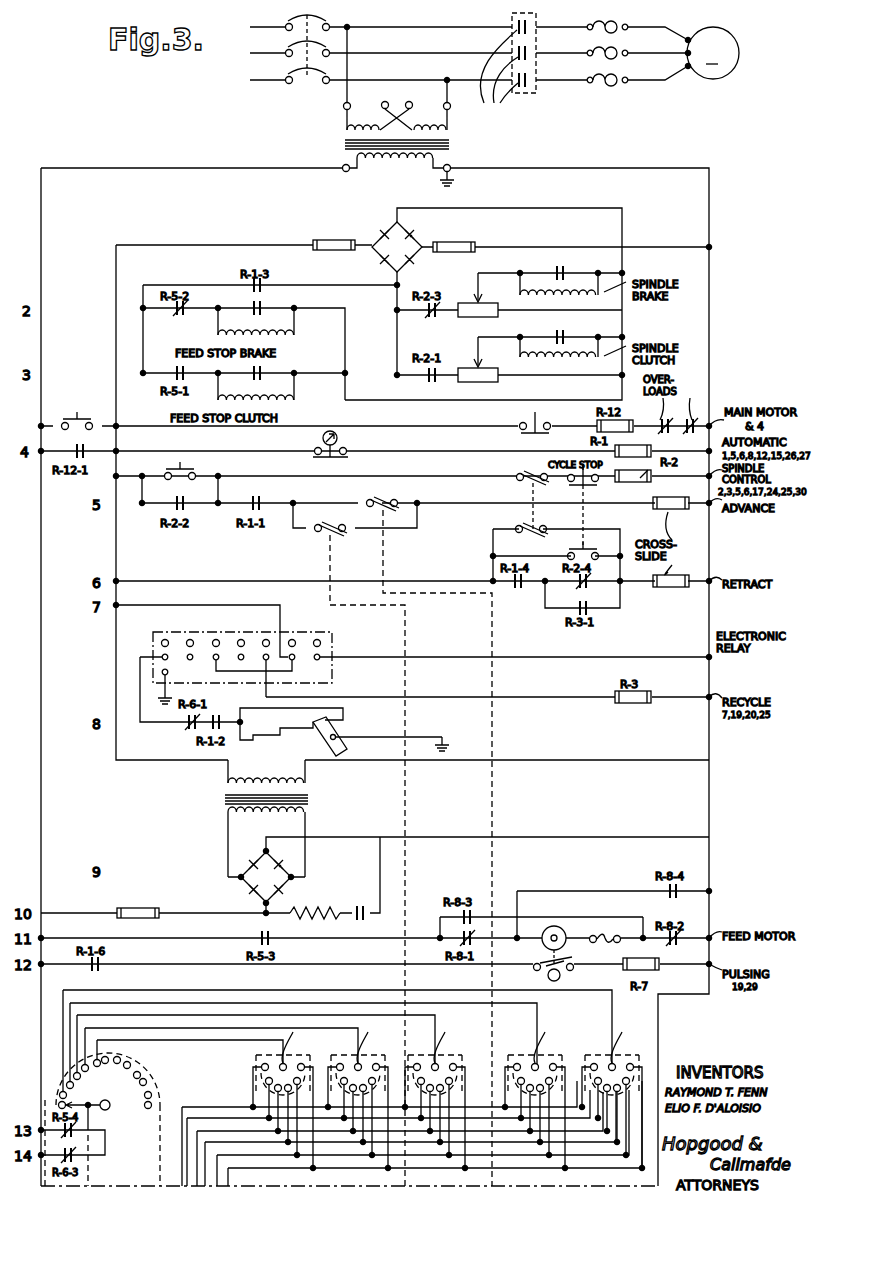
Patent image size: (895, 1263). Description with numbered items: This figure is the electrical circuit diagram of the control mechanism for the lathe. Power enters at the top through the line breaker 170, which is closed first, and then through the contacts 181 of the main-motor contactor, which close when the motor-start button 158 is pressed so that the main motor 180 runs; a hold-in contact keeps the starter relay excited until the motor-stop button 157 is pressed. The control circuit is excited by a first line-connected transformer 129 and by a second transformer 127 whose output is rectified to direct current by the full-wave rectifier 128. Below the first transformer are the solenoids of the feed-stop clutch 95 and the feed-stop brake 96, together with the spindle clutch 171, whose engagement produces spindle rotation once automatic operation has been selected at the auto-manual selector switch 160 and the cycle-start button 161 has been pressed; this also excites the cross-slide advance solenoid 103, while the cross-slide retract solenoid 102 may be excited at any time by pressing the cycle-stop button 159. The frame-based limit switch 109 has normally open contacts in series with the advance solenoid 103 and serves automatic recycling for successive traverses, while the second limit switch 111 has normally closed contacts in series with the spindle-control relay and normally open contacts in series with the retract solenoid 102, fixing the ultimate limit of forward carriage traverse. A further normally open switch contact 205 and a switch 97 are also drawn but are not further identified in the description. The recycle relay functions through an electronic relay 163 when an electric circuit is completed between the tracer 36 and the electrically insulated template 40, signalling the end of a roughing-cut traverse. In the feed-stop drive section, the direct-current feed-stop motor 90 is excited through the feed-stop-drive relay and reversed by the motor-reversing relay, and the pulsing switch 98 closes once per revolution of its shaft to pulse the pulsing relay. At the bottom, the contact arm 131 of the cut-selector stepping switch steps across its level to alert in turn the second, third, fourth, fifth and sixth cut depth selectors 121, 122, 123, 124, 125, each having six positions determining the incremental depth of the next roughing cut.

The line breaker 170 is at (328, 20).
The main-motor contactor contacts 181 is at (512, 14).
The line connected transformer 129 is at (344, 146).
The main motor 180 is at (698, 78).
The motor-start button 158 is at (92, 416).
The feed-stop brake 96 is at (296, 333).
The feed-stop clutch 95 is at (296, 397).
The spindle clutch 171 is at (545, 365).
The motor-stop button 157 is at (522, 432).
The auto-manual selector switch 160 is at (334, 458).
The cycle-start button 161 is at (195, 468).
The limit switch 109 is at (392, 500).
The limit switch 205 is at (328, 540).
The second limit switch 111 is at (548, 490).
The cycle-stop button 159 is at (587, 535).
The cross-slide advance solenoid 103 is at (655, 497).
The cross-slide retract solenoid 102 is at (668, 590).
The electronic relay 163 is at (186, 630).
The template 40 is at (256, 710).
The tracer 36 is at (320, 738).
The second transformer 127 is at (218, 803).
The full wave rectifier 128 is at (310, 862).
The feed-stop motor 90 is at (562, 928).
The pulsing switch 98 is at (577, 950).
The pulsing limit switch 97 is at (546, 973).
The contact arm 131 is at (72, 1097).
The sixth cut depth selector 125 is at (275, 1052).
The fifth cut depth selector 124 is at (358, 1052).
The fourth cut depth selector 123 is at (440, 1052).
The third cut depth selector 122 is at (530, 1052).
The second cut depth selector 121 is at (608, 1052).